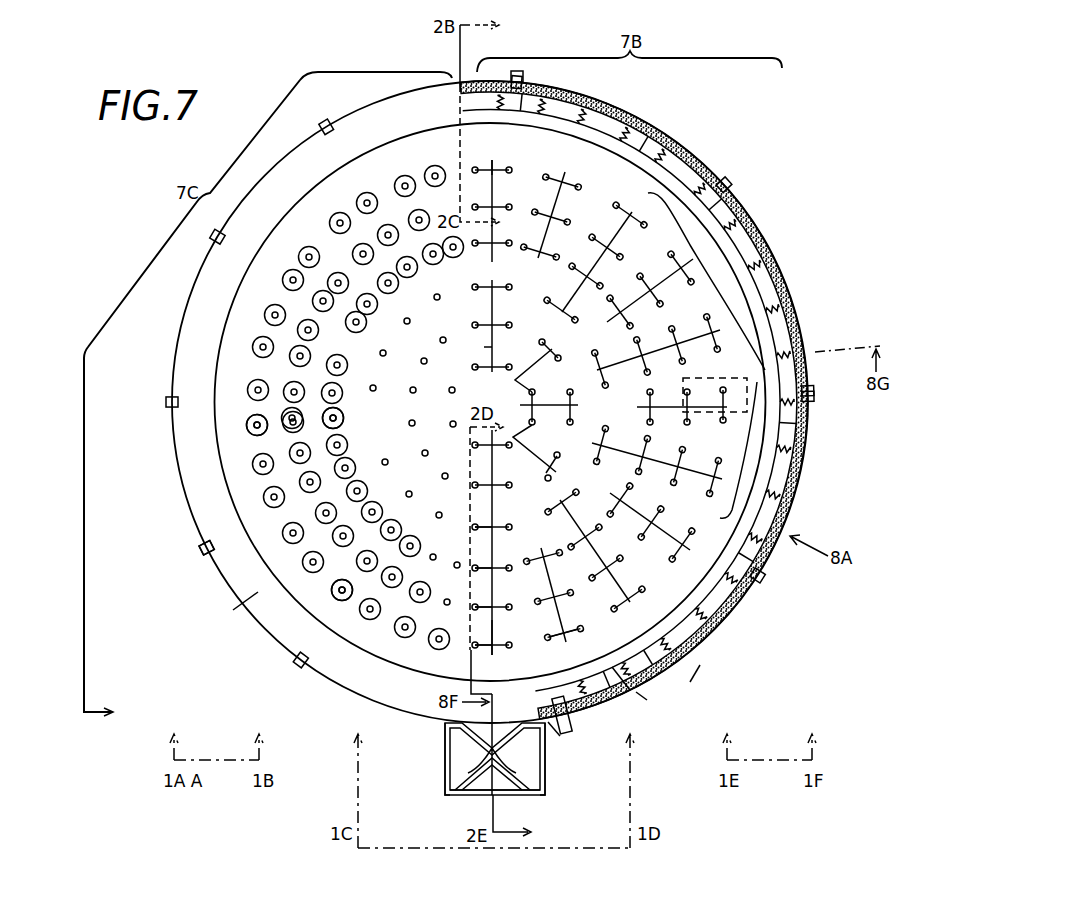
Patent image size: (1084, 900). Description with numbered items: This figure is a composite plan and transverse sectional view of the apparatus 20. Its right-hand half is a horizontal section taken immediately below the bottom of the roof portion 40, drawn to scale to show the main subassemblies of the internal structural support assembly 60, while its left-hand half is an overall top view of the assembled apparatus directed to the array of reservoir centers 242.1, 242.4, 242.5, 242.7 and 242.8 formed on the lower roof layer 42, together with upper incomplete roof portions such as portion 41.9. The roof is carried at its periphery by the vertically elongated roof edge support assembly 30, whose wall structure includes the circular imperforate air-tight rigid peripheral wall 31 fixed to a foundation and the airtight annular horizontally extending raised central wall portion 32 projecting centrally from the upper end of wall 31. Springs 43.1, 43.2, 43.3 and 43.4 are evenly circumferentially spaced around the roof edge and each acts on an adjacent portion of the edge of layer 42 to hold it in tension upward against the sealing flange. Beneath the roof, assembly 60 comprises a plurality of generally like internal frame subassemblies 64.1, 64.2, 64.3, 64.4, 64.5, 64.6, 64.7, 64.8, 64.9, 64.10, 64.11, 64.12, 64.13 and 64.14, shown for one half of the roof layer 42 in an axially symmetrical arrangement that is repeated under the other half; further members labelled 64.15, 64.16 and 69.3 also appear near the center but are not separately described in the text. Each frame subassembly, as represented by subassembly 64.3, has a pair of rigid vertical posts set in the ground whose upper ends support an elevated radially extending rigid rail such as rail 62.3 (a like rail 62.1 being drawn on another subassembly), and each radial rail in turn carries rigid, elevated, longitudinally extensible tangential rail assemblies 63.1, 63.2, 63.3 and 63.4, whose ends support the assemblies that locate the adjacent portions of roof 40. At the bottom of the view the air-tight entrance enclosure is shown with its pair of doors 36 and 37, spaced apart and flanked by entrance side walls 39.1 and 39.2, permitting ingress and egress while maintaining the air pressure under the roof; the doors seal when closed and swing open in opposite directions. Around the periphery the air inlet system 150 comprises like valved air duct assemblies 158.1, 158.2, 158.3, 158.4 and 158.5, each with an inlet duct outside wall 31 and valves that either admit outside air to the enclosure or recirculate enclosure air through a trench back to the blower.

The apparatus 20 is at (795, 192).
The roof edge support assembly 30 is at (268, 628).
The peripheral wall 31 is at (693, 176).
The raised central wall portion 32 is at (233, 608).
The door 36 is at (496, 738).
The door 37 is at (473, 797).
The entrance side wall 39.1 is at (447, 797).
The entrance side wall 39.2 is at (545, 797).
The roof portion 40 is at (322, 612).
The upper incomplete portion 41.9 is at (262, 425).
The lower complete layer 42 is at (217, 565).
The spring 43.1 is at (573, 738).
The spring 43.2 is at (605, 674).
The spring 43.3 is at (660, 705).
The spring 43.4 is at (714, 668).
The internal structural support assembly 60 is at (790, 343).
The bar 62.1 is at (494, 203).
The radial rail 62.3 is at (510, 630).
The tangential rail assembly 63.1 is at (476, 532).
The tangential rail assembly 63.2 is at (476, 572).
The tangential rail assembly 63.3 is at (476, 611).
The tangential rail assembly 63.4 is at (480, 646).
The internal frame subassembly 64.1 is at (520, 148).
The internal frame subassembly 64.2 is at (560, 501).
The internal frame subassembly 64.3 is at (484, 515).
The internal frame subassembly 64.4 is at (560, 610).
The internal frame subassembly 64.5 is at (620, 583).
The internal frame subassembly 64.6 is at (668, 537).
The internal frame subassembly 64.7 is at (694, 466).
The internal frame subassembly 64.8 is at (690, 384).
The internal frame subassembly 64.9 is at (697, 338).
The internal frame subassembly 64.10 is at (658, 282).
The internal frame subassembly 64.11 is at (628, 212).
The internal frame subassembly 64.12 is at (645, 172).
The internal frame subassembly 64.13 is at (533, 454).
The internal frame subassembly 64.14 is at (540, 405).
The bar 64.15 is at (545, 354).
The bar 64.16 is at (466, 347).
The bar 69.3 is at (512, 302).
The air inlet system 150 is at (545, 74).
The valved air duct assembly 158.1 is at (562, 700).
The valved air duct assembly 158.2 is at (781, 589).
The valved air duct assembly 158.3 is at (815, 392).
The valved air duct assembly 158.4 is at (732, 180).
The valved air duct assembly 158.5 is at (523, 78).
The reservoir center 242.1 is at (372, 427).
The reservoir center 242.4 is at (335, 362).
The reservoir center 242.5 is at (328, 392).
The reservoir center 242.7 is at (330, 419).
The reservoir center 242.8 is at (250, 431).